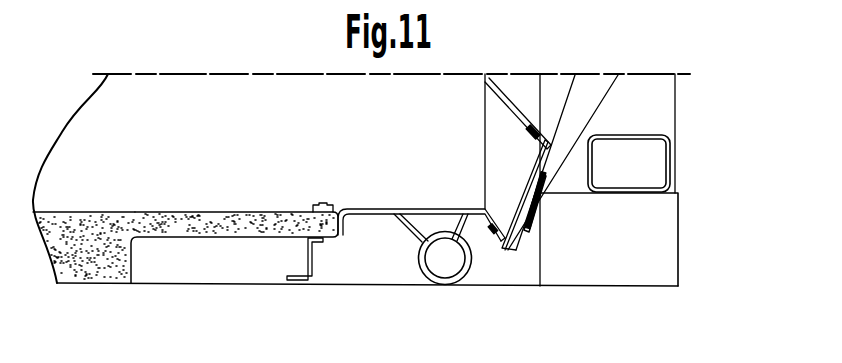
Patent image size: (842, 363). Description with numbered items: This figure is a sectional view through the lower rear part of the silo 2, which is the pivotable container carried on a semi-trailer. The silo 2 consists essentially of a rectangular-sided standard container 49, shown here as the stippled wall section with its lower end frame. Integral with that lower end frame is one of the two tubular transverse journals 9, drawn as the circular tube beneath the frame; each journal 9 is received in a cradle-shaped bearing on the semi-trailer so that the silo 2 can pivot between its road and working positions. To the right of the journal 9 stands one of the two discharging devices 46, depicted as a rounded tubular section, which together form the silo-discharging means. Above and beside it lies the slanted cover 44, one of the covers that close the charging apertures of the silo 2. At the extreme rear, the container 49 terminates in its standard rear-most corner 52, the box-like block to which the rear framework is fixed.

The silo 2 is at (183, 183).
The rectangular-sided standard container 49 is at (255, 183).
The tubular transverse journal 9 is at (445, 284).
The cover 44 is at (505, 252).
The discharging device 46 is at (568, 131).
The standard rear-most corner 52 is at (662, 250).